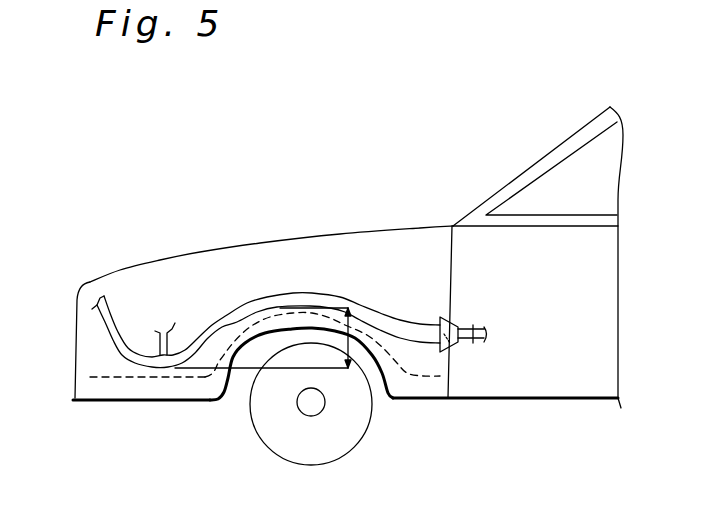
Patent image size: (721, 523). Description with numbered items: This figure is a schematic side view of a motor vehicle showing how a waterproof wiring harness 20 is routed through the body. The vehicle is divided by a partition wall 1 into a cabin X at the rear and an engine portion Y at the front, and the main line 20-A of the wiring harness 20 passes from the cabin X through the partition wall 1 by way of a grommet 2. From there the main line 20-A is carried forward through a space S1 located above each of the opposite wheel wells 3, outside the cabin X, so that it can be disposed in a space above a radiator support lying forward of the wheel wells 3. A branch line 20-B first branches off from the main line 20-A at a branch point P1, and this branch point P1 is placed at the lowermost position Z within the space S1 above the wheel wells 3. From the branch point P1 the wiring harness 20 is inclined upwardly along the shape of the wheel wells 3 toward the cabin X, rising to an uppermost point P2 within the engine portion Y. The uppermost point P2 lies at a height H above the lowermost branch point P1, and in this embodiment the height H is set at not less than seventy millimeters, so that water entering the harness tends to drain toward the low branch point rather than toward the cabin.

The wiring harness 20 is at (302, 292).
The main line 20-A is at (222, 317).
The branch line 20-B is at (160, 345).
The space S1 is at (259, 290).
The uppermost point P2 is at (282, 294).
The branch point P1 is at (170, 369).
The height H is at (350, 336).
The wheel well 3 is at (295, 330).
The engine portion Y is at (395, 252).
The cabin X is at (522, 370).
The partition wall 1 is at (450, 368).
The grommet 2 is at (460, 345).
The lowermost position Z is at (158, 373).